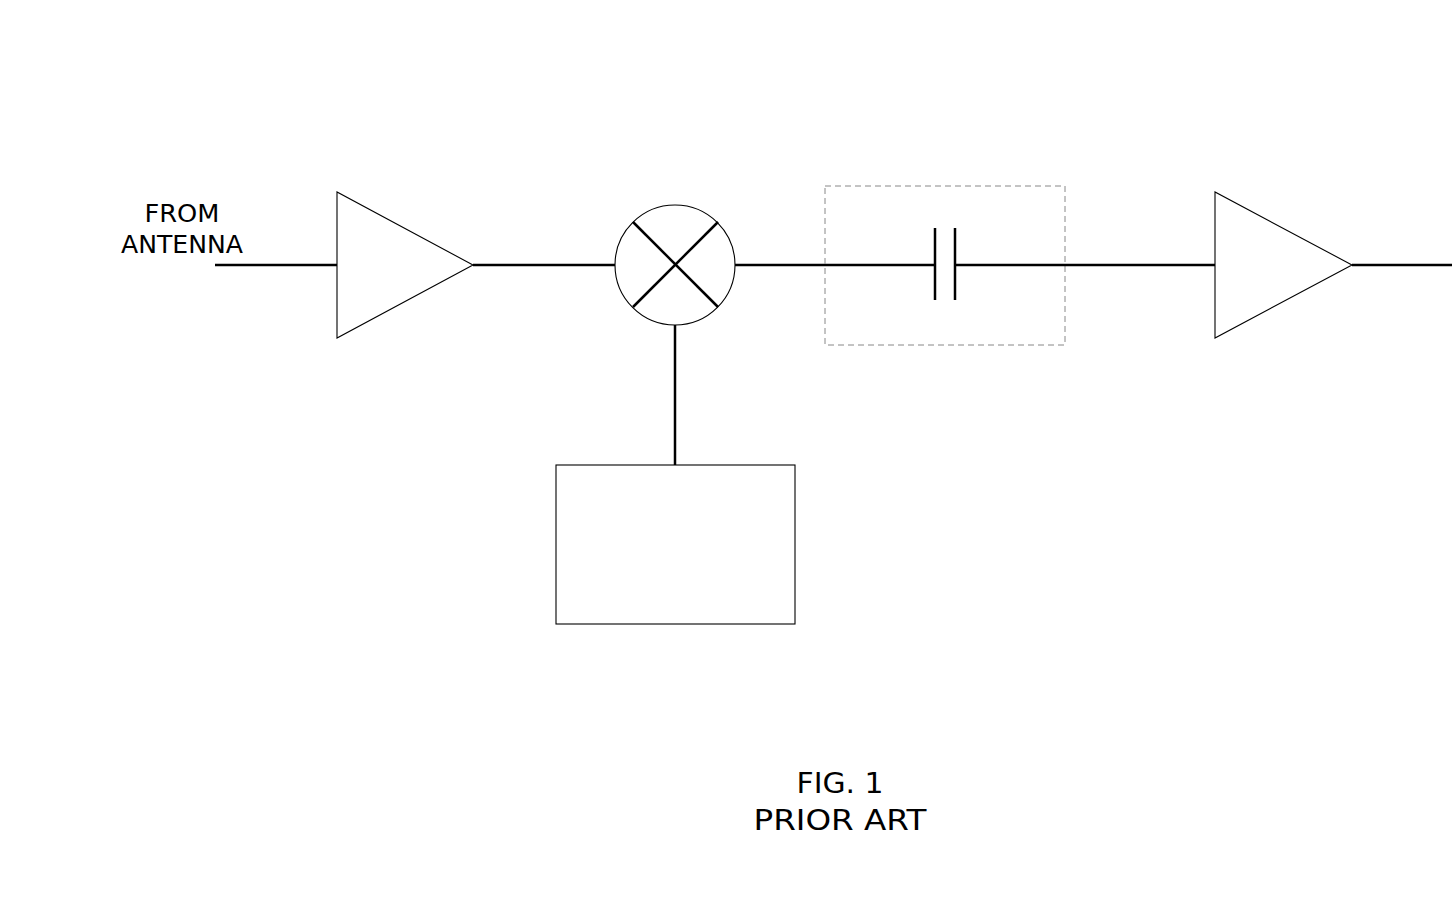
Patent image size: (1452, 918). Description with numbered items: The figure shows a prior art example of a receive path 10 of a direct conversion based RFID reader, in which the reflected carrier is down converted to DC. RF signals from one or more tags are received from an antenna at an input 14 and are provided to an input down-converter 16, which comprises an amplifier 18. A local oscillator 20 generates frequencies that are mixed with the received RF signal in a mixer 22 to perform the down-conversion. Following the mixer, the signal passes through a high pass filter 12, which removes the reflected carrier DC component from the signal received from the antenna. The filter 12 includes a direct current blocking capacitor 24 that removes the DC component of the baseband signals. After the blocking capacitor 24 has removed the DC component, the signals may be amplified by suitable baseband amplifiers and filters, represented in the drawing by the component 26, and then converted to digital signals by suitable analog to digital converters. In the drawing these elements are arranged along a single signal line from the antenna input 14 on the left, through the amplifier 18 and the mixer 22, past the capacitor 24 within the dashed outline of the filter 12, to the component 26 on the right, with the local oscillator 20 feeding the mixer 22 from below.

The receive path 10 is at (217, 137).
The high pass filter 12 is at (1013, 188).
The input 14 is at (280, 270).
The input down-converter 16 is at (753, 134).
The amplifier 18 is at (405, 230).
The local oscillator 20 is at (785, 467).
The mixer 22 is at (693, 213).
The direct current (DC) blocking capacitor 24 is at (955, 248).
The component 26 is at (1263, 218).